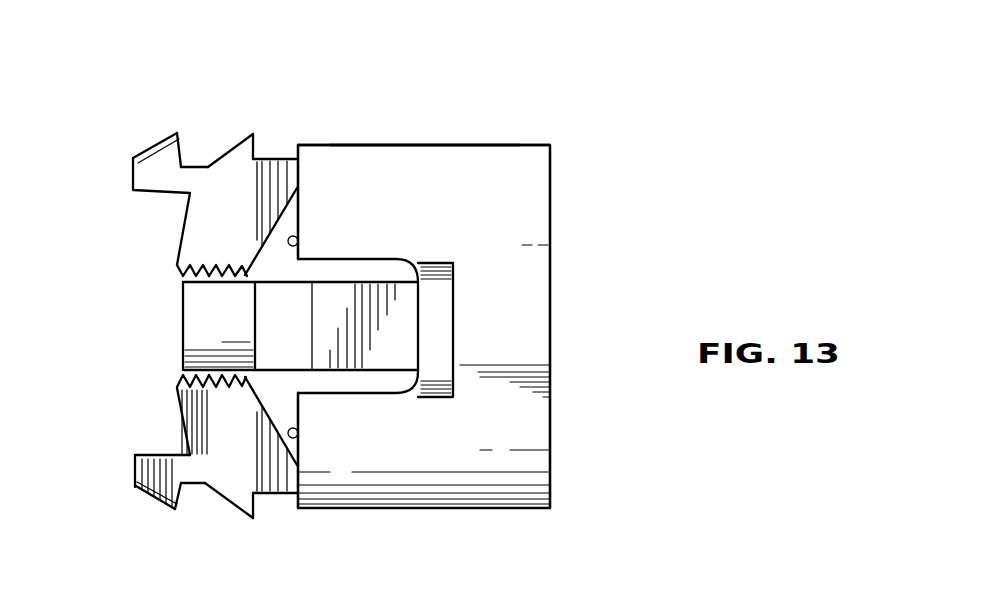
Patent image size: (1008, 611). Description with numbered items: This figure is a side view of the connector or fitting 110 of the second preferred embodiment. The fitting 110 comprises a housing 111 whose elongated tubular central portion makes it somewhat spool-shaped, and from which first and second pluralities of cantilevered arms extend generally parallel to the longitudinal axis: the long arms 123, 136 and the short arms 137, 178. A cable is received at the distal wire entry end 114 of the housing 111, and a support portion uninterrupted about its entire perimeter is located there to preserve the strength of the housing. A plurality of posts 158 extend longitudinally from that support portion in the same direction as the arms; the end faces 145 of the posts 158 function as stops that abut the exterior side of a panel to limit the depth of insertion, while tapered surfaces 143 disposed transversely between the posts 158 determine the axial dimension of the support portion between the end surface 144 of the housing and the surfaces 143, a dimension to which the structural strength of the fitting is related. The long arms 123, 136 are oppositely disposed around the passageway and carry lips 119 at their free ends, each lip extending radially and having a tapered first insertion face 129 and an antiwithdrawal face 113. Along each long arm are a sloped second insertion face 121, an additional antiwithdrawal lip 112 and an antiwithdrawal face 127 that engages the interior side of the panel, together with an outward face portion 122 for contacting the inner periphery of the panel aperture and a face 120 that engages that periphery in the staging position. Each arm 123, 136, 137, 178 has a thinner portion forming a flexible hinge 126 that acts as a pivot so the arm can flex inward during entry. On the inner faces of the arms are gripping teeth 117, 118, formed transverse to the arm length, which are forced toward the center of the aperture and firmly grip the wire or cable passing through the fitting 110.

The fitting 110 is at (615, 65).
The housing 111 is at (543, 144).
The antiwithdrawal lip 112 is at (253, 132).
The antiwithdrawal face 113 is at (179, 137).
The distal wire entry end 114 is at (585, 478).
The gripping teeth 117 is at (178, 267).
The teeth 118 is at (245, 268).
The lip 119 is at (155, 139).
The face 120 is at (203, 170).
The sloped second insertion face 121 is at (237, 144).
The outward face portion 122 is at (298, 150).
The long arm 123 is at (134, 172).
The flexible hinge 126 is at (378, 283).
The antiwithdrawal face 127 is at (274, 157).
The sloped first insertion face 129 is at (141, 152).
The long arm 136 is at (153, 456).
The short arm 137 is at (186, 300).
The tapered surface 143 is at (437, 300).
The end surface 144 is at (553, 283).
The end face 145 is at (298, 239).
The post 158 is at (448, 145).
The short arm 178 is at (208, 326).